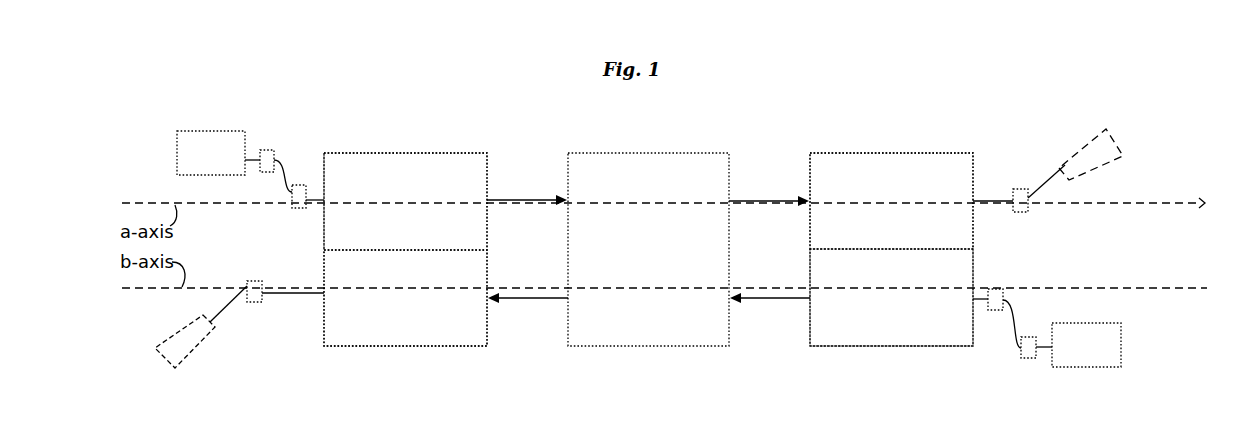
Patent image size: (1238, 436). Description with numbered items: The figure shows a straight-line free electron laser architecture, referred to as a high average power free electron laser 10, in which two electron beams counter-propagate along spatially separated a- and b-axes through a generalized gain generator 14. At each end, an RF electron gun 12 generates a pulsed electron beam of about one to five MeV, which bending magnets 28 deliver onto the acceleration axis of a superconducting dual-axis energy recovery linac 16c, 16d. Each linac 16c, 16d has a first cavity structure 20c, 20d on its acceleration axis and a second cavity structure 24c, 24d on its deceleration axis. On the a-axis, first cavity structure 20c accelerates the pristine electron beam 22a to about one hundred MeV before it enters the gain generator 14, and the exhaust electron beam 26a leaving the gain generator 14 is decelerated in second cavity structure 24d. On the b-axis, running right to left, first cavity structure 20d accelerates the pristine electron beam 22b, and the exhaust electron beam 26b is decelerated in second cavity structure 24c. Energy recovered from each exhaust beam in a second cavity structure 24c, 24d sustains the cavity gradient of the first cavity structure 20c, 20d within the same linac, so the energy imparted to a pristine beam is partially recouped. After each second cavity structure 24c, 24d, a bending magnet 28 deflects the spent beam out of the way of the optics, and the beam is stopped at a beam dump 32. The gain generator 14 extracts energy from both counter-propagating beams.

The high average power free electron laser 10 is at (140, 113).
The RF electron gun 12 is at (649, 249).
The gain generator 14 is at (649, 346).
The superconducting dual-axis energy recovery linac 16c is at (405, 196).
The superconducting dual-axis energy recovery linac 16d is at (891, 196).
The first cavity structure 20c is at (405, 201).
The first cavity structure 20d is at (891, 297).
The second cavity structure 24c is at (405, 298).
The second cavity structure 24d is at (891, 201).
The pristine electron beam 22a is at (519, 199).
The pristine electron beam 22b is at (779, 298).
The exhaust electron beam 26a is at (757, 200).
The exhaust electron beam 26b is at (527, 298).
The bending magnet 28 is at (300, 185).
The beam dump 32 is at (1087, 140).